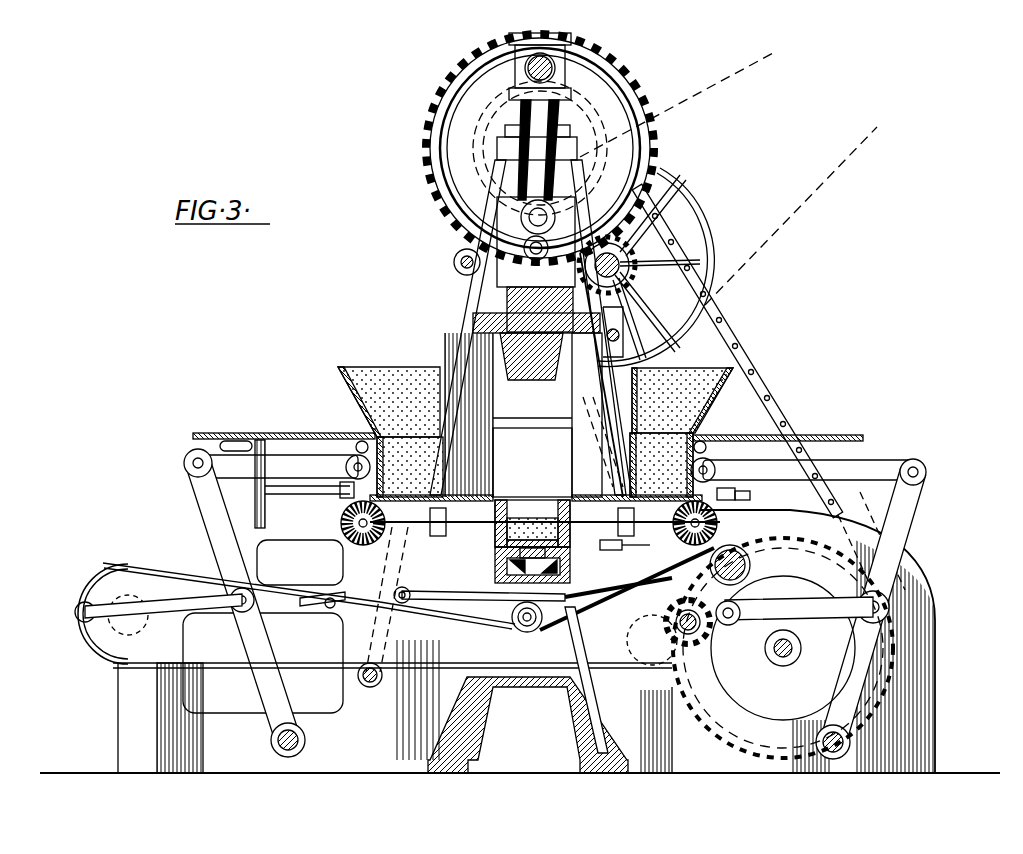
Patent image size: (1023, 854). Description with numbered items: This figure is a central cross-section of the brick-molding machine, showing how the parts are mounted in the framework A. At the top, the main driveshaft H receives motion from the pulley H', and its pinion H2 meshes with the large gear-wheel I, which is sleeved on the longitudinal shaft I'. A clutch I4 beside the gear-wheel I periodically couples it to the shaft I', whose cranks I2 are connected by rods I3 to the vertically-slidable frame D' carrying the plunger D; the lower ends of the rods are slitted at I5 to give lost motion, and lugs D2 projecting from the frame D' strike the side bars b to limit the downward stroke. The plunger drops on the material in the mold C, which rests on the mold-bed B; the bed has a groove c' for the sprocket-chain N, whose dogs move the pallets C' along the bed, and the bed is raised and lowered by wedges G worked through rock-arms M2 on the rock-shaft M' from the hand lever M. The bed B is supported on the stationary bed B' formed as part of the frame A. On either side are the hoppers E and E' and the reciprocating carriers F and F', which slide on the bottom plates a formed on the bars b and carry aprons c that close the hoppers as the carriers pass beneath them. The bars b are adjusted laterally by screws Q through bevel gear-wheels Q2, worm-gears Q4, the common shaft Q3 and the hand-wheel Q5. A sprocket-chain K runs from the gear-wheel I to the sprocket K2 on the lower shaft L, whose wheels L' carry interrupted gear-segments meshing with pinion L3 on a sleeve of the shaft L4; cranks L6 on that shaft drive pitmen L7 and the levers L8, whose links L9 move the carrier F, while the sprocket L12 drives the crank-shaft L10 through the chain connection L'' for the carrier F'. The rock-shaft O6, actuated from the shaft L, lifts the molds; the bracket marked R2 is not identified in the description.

The framework A is at (905, 552).
The gear-wheel I is at (540, 144).
The cranks I2 is at (520, 62).
The rods I3 is at (520, 113).
The clutch I4 is at (450, 168).
The shaft I' is at (515, 327).
The slits I5 is at (530, 215).
The vertically-slidable frame D' is at (500, 302).
The plunger D is at (515, 316).
The lugs D2 is at (520, 345).
The pallets C' is at (532, 466).
The bottom plates a is at (610, 471).
The pulley H' is at (667, 267).
The main driveshaft H is at (637, 247).
The pinion H2 is at (637, 268).
The lever bracket R2 is at (620, 335).
The sprocket-chain K is at (730, 334).
The sprocket K2 is at (871, 536).
The hopper E' is at (389, 381).
The carrier F' is at (380, 450).
The hopper E is at (682, 388).
The carrier F is at (684, 449).
The molds C is at (372, 451).
The shelves or aprons c is at (778, 421).
The links L9 is at (318, 466).
The levers L8 is at (215, 522).
The hand-wheel Q5 is at (258, 503).
The common shaft Q3 is at (315, 495).
The worm-gears Q4 is at (745, 495).
The bars b is at (583, 545).
The screws Q is at (718, 523).
The bevel gear-wheels Q2 is at (640, 548).
The mold-bed B is at (512, 541).
The groove c' is at (507, 551).
The sprocket-chain N is at (500, 580).
The wedges G is at (510, 615).
The sprocket-and-chain connection L'' is at (396, 626).
The crank-shaft L10 is at (130, 620).
The lever M is at (373, 599).
The rock-shaft M' is at (361, 693).
The rock-arms M2 is at (480, 620).
The stationary bed B' is at (528, 703).
The sprocket L12 is at (645, 640).
The shaft L4 is at (657, 667).
The pinion L3 is at (691, 648).
The rock-shaft O6 is at (750, 562).
The wheels L' is at (783, 648).
The cranks L6 is at (757, 668).
The shaft L is at (781, 668).
The pitmen L7 is at (827, 612).